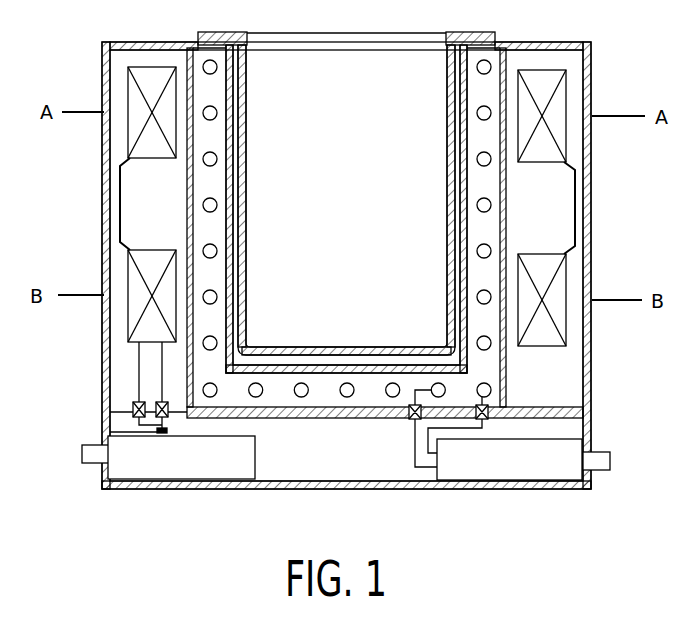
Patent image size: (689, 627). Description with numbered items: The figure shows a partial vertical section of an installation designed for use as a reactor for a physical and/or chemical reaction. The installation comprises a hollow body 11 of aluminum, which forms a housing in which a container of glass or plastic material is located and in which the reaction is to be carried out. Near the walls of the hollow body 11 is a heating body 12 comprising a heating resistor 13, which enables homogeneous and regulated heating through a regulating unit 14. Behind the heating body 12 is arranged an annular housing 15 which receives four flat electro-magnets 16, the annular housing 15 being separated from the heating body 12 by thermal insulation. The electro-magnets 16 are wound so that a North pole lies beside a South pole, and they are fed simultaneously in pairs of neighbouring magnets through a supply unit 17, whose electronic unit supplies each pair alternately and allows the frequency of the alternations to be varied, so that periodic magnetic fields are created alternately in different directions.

The hollow body 11 is at (248, 212).
The heating body 12 is at (210, 90).
The heating resistor 13 is at (217, 296).
The regulating unit 14 is at (505, 463).
The annular housing 15 is at (143, 182).
The electro-magnets 16 is at (138, 312).
The supply unit 17 is at (178, 460).